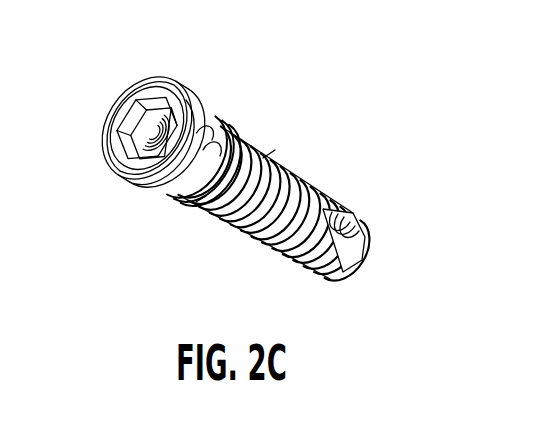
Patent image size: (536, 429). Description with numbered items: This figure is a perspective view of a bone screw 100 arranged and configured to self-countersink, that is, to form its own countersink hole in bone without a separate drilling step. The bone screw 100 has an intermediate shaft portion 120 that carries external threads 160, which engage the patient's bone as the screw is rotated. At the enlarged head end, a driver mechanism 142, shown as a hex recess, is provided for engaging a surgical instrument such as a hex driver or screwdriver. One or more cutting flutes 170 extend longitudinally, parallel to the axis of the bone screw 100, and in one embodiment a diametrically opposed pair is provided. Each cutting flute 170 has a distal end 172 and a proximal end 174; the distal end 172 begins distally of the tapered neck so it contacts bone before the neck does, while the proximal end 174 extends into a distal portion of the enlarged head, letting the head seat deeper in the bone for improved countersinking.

The bone screw 100 is at (345, 82).
The driver mechanism 142 is at (140, 104).
The proximal end of the cutting flutes 174 is at (205, 110).
The external threads 160 is at (225, 126).
The distal end of the cutting flute 172 is at (271, 161).
The cutting flutes 170 is at (202, 200).
The intermediate shaft portion 120 is at (270, 247).